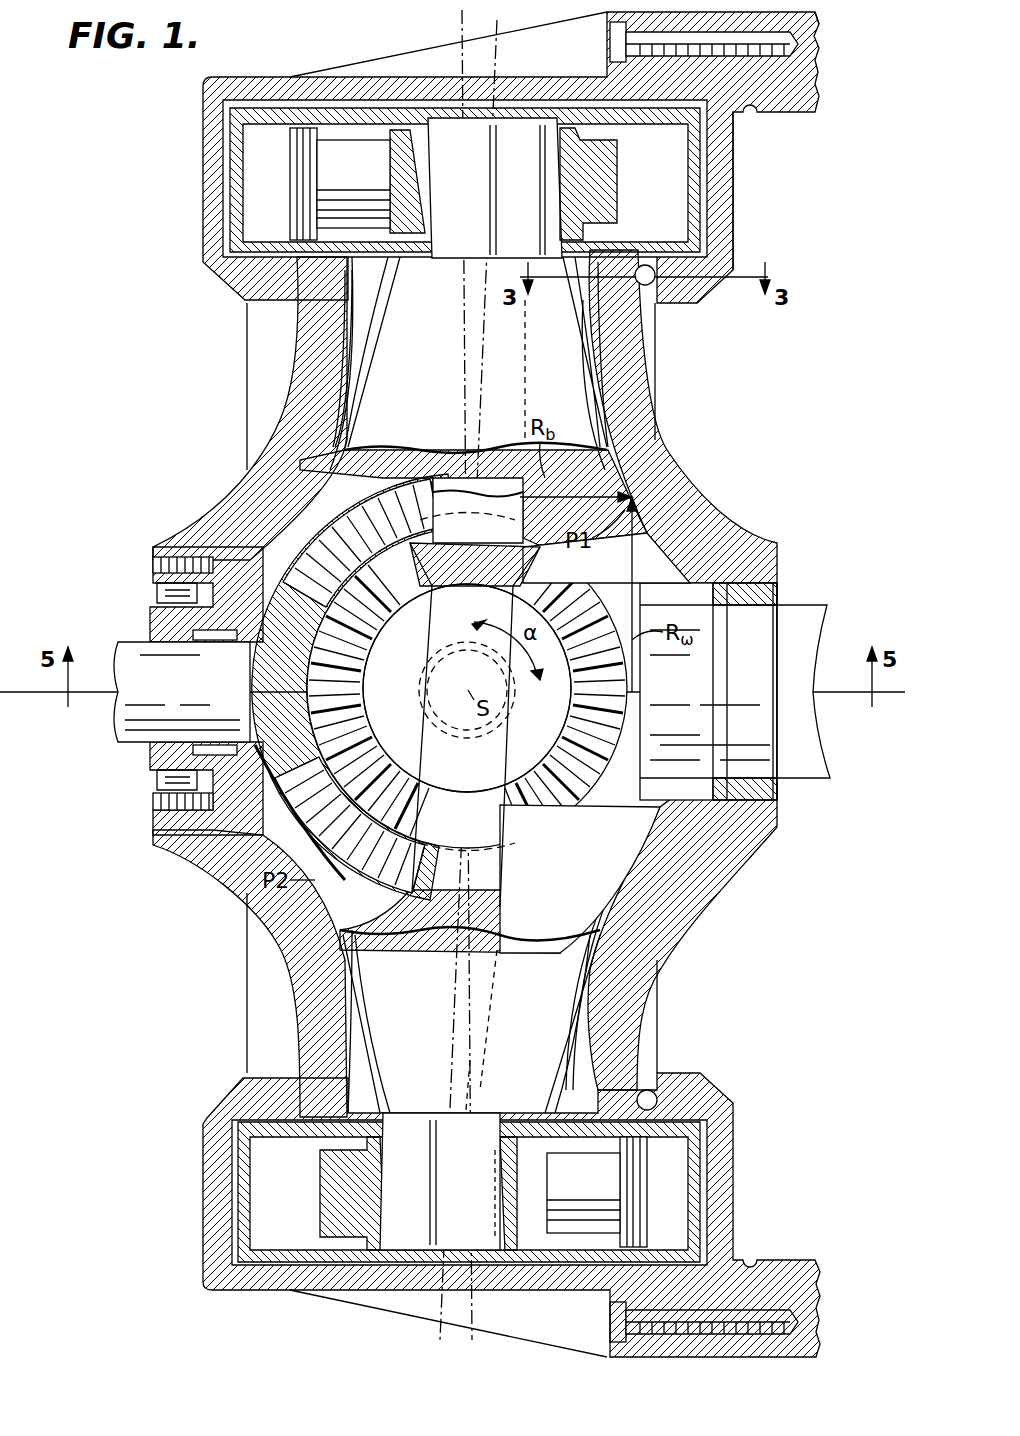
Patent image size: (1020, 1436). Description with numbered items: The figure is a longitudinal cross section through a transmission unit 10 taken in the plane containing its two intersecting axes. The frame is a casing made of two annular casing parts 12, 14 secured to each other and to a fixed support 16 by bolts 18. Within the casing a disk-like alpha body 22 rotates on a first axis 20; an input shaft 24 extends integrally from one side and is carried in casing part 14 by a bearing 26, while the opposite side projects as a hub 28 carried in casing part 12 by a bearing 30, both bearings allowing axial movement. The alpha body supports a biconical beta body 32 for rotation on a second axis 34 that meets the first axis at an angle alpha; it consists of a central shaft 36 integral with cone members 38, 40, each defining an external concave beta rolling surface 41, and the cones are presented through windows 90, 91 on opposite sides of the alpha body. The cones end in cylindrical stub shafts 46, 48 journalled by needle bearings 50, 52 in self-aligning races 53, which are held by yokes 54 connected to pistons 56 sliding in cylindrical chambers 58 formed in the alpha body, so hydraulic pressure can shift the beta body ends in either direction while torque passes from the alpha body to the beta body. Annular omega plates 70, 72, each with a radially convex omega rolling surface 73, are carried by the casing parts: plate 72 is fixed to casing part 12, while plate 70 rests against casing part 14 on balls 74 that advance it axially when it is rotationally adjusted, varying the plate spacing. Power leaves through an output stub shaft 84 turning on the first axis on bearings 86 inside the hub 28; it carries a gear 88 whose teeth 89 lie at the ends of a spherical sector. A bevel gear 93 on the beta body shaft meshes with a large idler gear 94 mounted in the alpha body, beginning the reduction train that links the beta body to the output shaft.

The transmission unit 10 is at (198, 330).
The casing part 12 is at (398, 78).
The casing part 14 is at (732, 186).
The fixed support 16 is at (800, 6).
The bolts 18 is at (618, 48).
The first axis 20 is at (745, 672).
The alpha body 22 is at (372, 322).
The input shaft 24 is at (745, 691).
The bearing 26 is at (770, 590).
The hub 28 is at (158, 628).
The bearing 30 is at (158, 592).
The beta body 32 is at (640, 720).
The second axis 34 is at (445, 1098).
The central shaft 36 is at (500, 866).
The cone member 38 is at (524, 370).
The cone member 40 is at (502, 1020).
The beta rolling surface 41 is at (372, 372).
The stub shaft 46 is at (495, 188).
The stub shaft 48 is at (440, 1181).
The needle bearing 50 is at (517, 190).
The needle bearing 52 is at (510, 1190).
The races 53 is at (510, 1160).
The yokes 54 is at (618, 190).
The pistons 56 is at (310, 173).
The cylindrical chambers 58 is at (232, 222).
The omega plate 70 is at (660, 460).
The omega plate 72 is at (262, 466).
The omega rolling surface 73 is at (338, 338).
The balls 74 is at (652, 294).
The output stub shaft 84 is at (182, 692).
The bearings 86 is at (215, 642).
The gear 88 is at (330, 790).
The teeth 89 is at (450, 780).
The window 90 is at (380, 342).
The window 91 is at (425, 1082).
The bevel gear 93 is at (420, 545).
The idler gear 94 is at (365, 643).